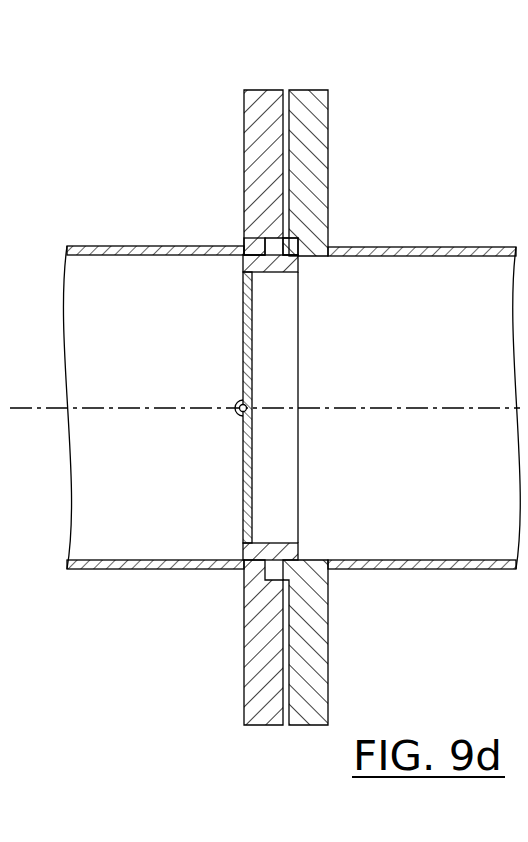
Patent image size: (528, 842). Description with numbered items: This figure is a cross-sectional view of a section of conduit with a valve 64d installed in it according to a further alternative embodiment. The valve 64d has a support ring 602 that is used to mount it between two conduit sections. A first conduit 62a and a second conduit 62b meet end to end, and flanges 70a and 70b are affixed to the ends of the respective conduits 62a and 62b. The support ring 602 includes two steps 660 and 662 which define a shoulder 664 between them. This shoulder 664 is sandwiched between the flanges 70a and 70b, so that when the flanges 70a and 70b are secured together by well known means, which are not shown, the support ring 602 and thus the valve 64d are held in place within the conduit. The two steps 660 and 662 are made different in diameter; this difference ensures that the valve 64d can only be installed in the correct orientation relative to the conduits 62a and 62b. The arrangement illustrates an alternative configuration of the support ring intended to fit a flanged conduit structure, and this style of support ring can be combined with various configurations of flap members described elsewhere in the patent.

The flange 70a is at (261, 90).
The flange 70b is at (308, 90).
The conduit 62a is at (95, 246).
The conduit 62b is at (466, 247).
The step 660 is at (258, 246).
The step 662 is at (296, 248).
The shoulder 664 is at (285, 240).
The support ring 602 is at (299, 360).
The valve 64d is at (320, 476).